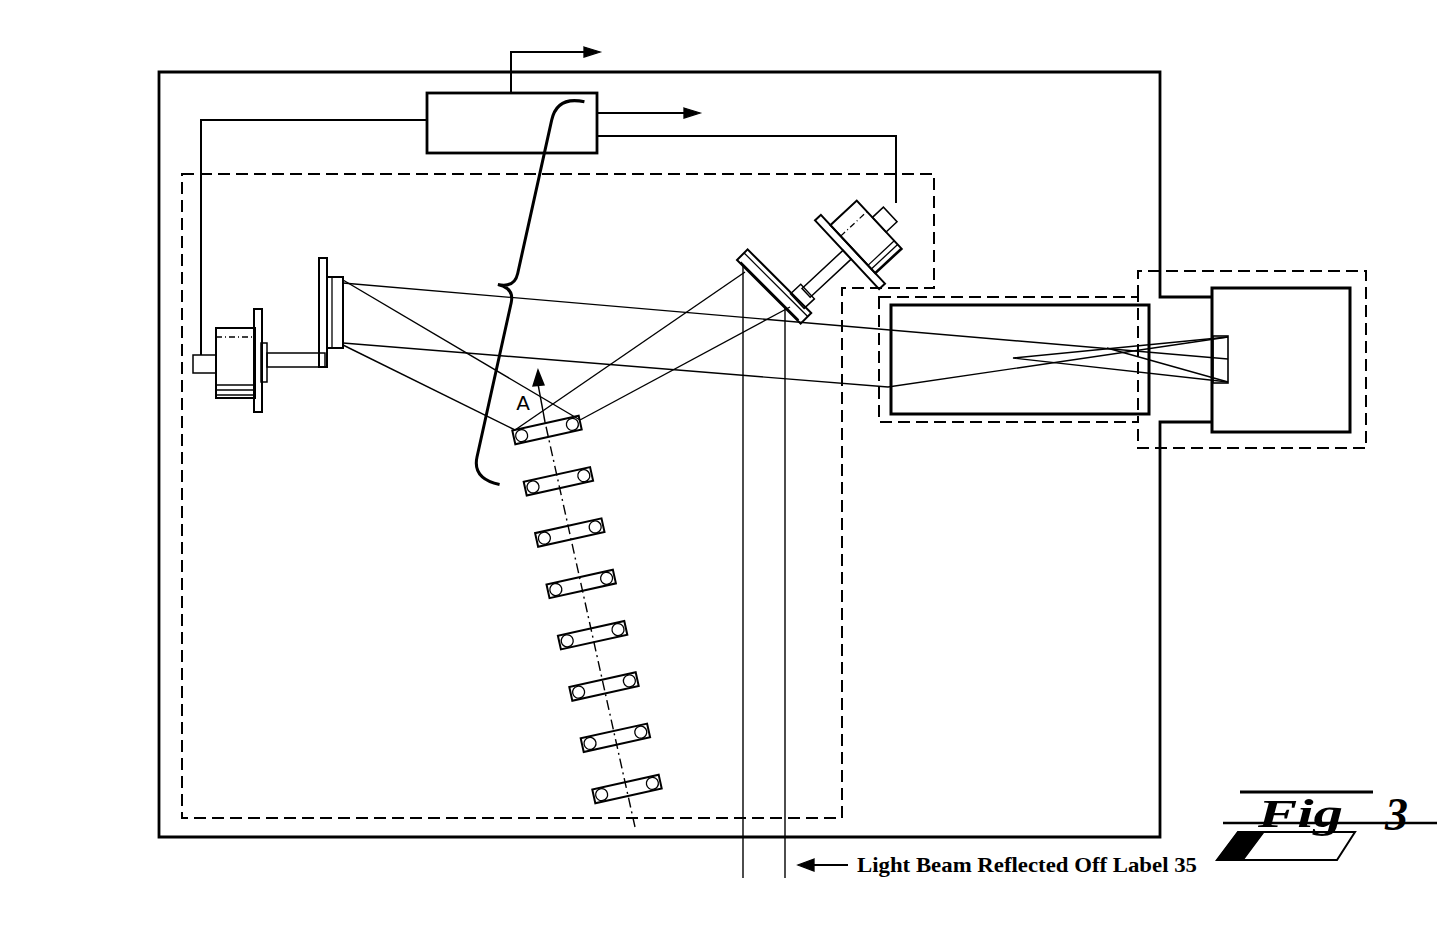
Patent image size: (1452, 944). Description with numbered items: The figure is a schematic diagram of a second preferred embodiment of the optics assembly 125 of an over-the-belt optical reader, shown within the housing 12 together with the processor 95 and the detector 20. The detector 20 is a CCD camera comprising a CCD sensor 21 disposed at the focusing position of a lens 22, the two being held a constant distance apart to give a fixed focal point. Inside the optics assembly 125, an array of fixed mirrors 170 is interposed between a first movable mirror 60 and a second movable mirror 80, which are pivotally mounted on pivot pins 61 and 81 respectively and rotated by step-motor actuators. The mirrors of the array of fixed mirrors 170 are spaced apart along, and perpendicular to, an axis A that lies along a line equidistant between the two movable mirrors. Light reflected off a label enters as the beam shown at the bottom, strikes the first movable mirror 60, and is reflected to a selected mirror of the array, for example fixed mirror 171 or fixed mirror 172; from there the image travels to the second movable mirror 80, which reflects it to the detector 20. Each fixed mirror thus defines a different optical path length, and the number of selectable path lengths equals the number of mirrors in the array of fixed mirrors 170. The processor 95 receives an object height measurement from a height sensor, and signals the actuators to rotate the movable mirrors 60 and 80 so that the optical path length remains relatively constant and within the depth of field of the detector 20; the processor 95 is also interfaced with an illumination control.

The housing 12 is at (1132, 72).
The detector 20 is at (1320, 270).
The CCD sensor 21 is at (1228, 370).
The lens 22 is at (1030, 414).
The first movable mirror 60 is at (742, 267).
The pivot pin 61 is at (771, 288).
The second movable mirror 80 is at (307, 298).
The pivot pin 81 is at (338, 308).
The processor 95 is at (597, 153).
The optics assembly 125 is at (842, 633).
The array of fixed mirrors 170 is at (584, 447).
The fixed mirror 171 is at (588, 425).
The fixed mirror 172 is at (668, 783).